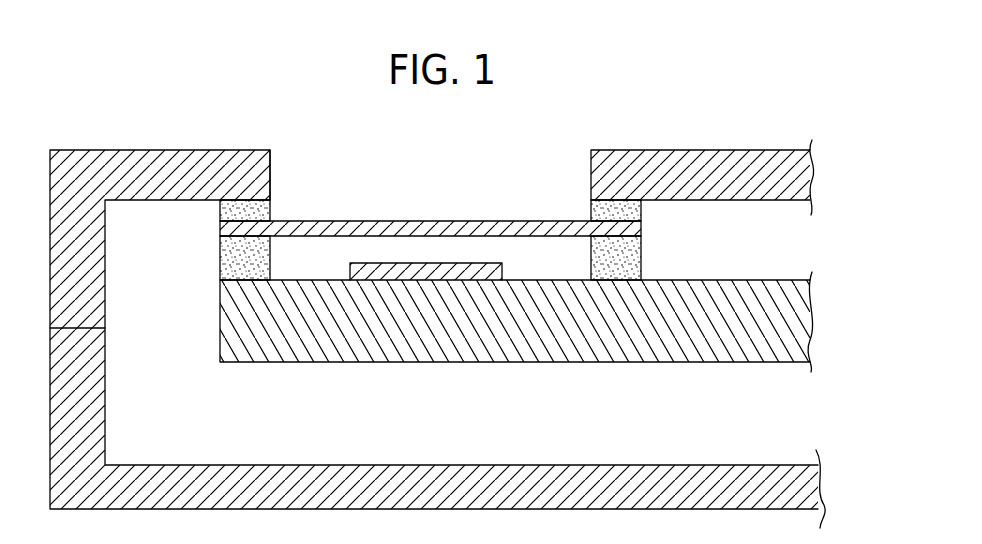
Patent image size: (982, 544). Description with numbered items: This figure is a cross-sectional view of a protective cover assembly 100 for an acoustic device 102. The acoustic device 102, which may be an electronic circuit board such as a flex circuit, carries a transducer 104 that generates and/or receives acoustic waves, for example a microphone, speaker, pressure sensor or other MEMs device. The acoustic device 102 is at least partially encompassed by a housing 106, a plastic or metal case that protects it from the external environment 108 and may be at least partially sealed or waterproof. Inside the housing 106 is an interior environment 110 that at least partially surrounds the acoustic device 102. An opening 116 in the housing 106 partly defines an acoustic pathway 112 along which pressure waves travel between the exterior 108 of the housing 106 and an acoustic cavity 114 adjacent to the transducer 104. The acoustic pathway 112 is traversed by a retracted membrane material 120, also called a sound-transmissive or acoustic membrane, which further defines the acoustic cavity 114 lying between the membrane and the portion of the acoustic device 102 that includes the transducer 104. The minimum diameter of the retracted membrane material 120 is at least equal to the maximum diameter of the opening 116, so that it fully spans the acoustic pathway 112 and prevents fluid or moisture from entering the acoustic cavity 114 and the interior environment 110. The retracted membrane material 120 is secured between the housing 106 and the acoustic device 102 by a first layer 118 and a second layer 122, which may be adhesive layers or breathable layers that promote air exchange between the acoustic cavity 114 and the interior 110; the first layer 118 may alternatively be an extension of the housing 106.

The protective cover assembly 100 is at (672, 74).
The acoustic device 102 is at (790, 340).
The transducer 104 is at (455, 264).
The housing 106 is at (810, 173).
The external environment 108 is at (97, 62).
The interior environment 110 is at (173, 352).
The acoustic pathway 112 is at (383, 152).
The acoustic cavity 114 is at (556, 266).
The opening 116 is at (270, 188).
The first layer 118 is at (247, 210).
The retracted membrane material 120 is at (437, 221).
The second layer 122 is at (227, 253).